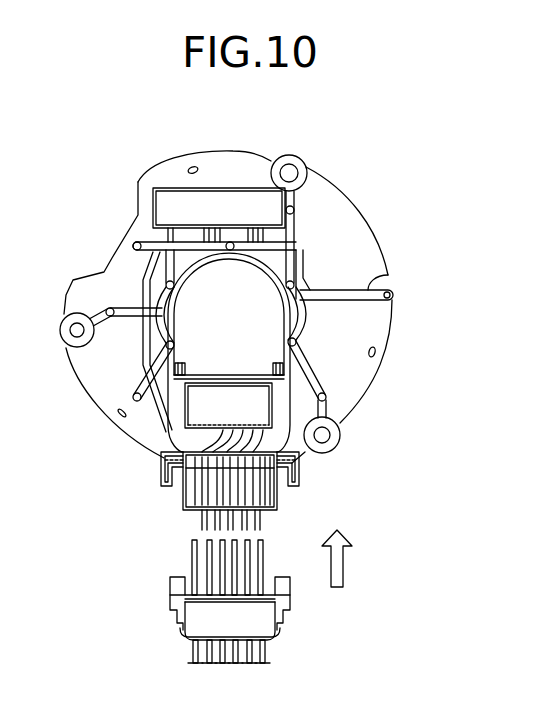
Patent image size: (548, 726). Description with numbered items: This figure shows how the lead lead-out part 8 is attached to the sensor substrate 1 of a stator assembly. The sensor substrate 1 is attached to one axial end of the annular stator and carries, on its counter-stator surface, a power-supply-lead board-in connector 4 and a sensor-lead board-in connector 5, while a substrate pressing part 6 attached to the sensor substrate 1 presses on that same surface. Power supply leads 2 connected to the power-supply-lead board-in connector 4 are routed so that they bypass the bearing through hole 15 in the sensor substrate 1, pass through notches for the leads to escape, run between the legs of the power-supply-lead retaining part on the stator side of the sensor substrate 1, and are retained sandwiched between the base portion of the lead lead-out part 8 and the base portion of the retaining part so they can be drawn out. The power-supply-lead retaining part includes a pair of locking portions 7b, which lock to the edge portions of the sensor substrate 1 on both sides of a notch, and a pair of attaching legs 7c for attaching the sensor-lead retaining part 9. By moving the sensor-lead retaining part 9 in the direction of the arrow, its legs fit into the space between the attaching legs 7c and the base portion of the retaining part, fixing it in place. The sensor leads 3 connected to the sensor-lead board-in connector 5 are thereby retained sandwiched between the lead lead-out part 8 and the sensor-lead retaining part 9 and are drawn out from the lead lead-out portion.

The sensor substrate 1 is at (341, 221).
The power supply leads 2 is at (300, 342).
The sensor leads 3 is at (258, 552).
The power-supply-lead board-in connector 4 is at (175, 200).
The sensor-lead board-in connector 5 is at (260, 418).
The substrate pressing part 6 is at (396, 276).
The locking portions 7b is at (162, 461).
The attaching legs 7c is at (162, 472).
The lead lead-out part 8 is at (185, 498).
The sensor-lead retaining part 9 is at (184, 625).
The bearing through hole 15 is at (172, 310).